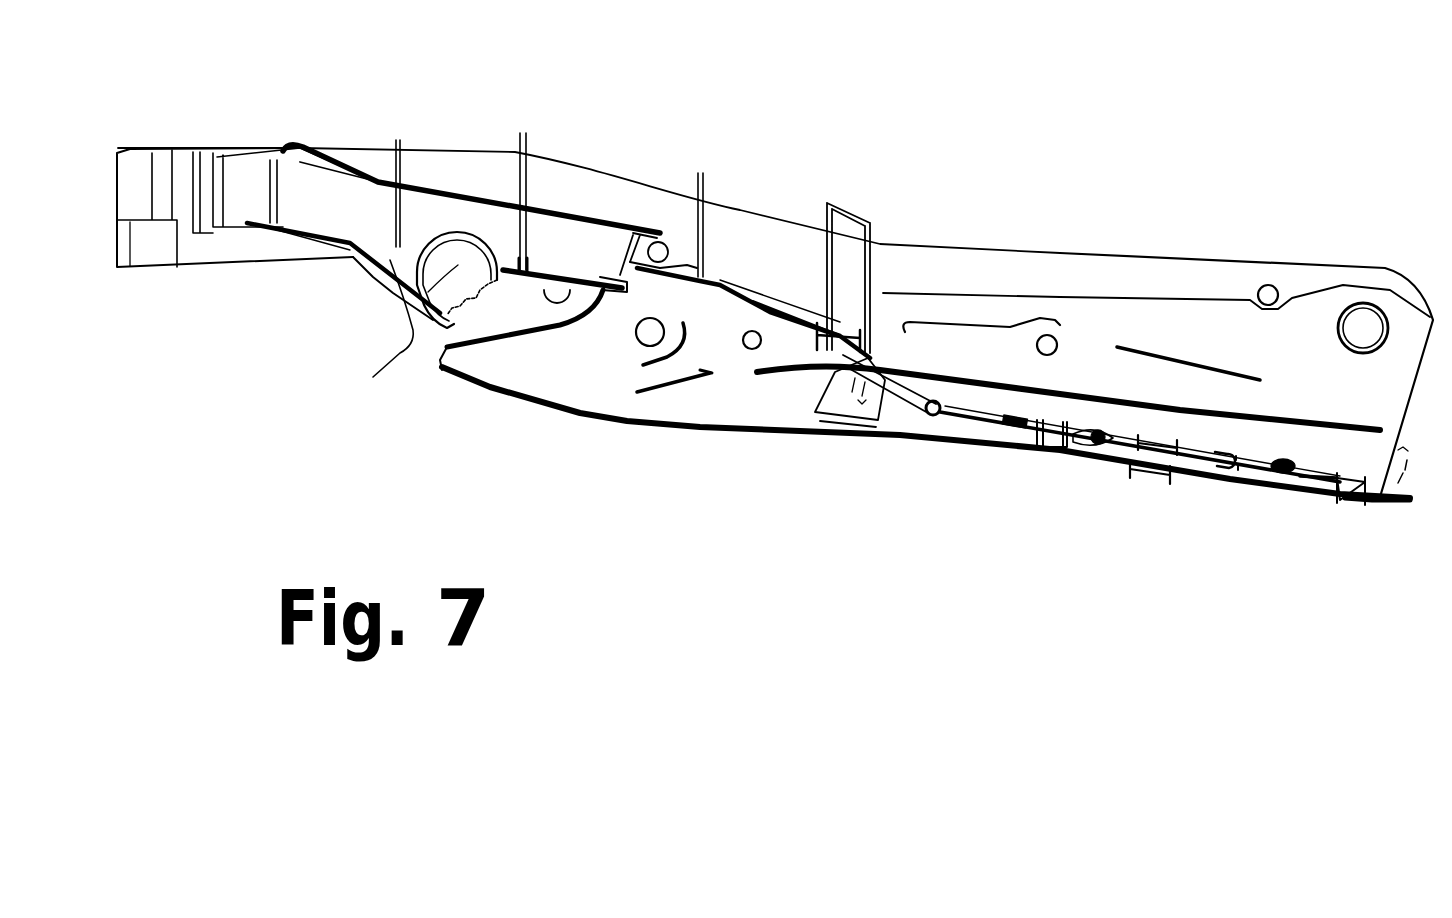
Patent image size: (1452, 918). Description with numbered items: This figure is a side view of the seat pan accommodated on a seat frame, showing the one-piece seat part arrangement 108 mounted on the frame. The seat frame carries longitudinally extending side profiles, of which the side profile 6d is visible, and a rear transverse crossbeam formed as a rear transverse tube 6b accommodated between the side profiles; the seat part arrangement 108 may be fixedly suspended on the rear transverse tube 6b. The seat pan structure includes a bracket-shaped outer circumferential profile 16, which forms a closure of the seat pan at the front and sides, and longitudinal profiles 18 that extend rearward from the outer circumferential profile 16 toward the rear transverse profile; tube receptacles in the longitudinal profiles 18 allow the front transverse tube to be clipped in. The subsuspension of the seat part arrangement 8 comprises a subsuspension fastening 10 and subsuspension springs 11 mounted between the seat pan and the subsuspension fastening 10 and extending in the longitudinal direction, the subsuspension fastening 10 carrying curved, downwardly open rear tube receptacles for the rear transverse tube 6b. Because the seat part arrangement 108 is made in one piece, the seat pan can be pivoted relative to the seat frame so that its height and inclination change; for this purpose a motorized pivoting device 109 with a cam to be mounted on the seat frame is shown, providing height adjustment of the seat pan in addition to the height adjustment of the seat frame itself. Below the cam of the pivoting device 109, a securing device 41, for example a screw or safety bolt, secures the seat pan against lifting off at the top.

The seat part arrangement 108 is at (545, 157).
The longitudinal profiles 18 is at (140, 178).
The outer circumferential profile 16 is at (260, 252).
The motorized pivoting device 109 is at (510, 292).
The securing device 41 is at (417, 360).
The seat part arrangement 8 is at (990, 257).
The side profile 6d is at (1200, 337).
The rear transverse tube 6b is at (1372, 317).
The subsuspension springs 11 is at (977, 425).
The subsuspension fastening 10 is at (1333, 500).